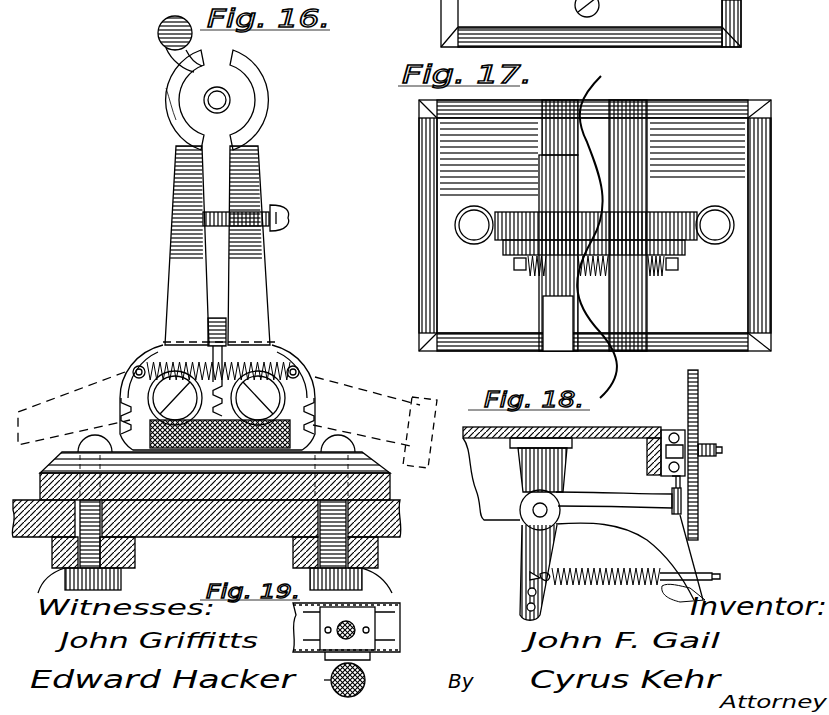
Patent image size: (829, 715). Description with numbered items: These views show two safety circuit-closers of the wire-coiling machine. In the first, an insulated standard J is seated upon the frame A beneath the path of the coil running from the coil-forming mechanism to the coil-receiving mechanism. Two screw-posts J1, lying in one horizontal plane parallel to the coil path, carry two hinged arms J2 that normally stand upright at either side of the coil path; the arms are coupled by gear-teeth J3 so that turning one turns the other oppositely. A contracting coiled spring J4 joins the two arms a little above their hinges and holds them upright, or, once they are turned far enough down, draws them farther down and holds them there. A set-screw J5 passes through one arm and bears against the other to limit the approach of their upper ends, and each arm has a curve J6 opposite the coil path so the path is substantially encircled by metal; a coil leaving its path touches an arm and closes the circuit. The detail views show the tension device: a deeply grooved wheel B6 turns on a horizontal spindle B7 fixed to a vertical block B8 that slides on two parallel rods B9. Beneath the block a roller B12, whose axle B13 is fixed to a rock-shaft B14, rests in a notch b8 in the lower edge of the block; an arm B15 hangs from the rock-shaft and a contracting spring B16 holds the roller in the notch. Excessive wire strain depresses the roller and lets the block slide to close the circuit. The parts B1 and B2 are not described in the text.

In FIG. 16, the insulated standard J is at (280, 356).
In FIG. 16, the screw-posts J1 is at (216, 398).
In FIG. 16, the arms J2 is at (217, 245).
In FIG. 16, the gear-teeth J3 is at (122, 397).
In FIG. 16, the contracting coiled spring J4 is at (298, 368).
In FIG. 16, the set-screw J5 is at (288, 218).
In FIG. 16, the curve J6 is at (170, 102).
In FIG. 17, the wire B1 is at (603, 86).
In FIG. 16, the ring B2 is at (230, 110).
In FIG. 18, the frame A is at (562, 461).
In FIG. 18, the wheel B6 is at (698, 395).
In FIG. 19, the wheel B6 is at (385, 600).
In FIG. 18, the horizontal spindle B7 is at (722, 450).
In FIG. 19, the horizontal spindle B7 is at (356, 630).
In FIG. 18, the vertical block B8 is at (676, 432).
In FIG. 19, the notch b8 is at (370, 660).
In FIG. 18, the parallel rods B9 is at (648, 449).
In FIG. 19, the parallel rods B9 is at (375, 615).
In FIG. 18, the roller B12 is at (630, 558).
In FIG. 19, the roller B12 is at (360, 692).
In FIG. 18, the axle B13 is at (618, 495).
In FIG. 19, the axle B13 is at (324, 680).
In FIG. 18, the rock-shaft B14 is at (538, 510).
In FIG. 18, the arm B15 is at (530, 566).
In FIG. 18, the contracting spring B16 is at (603, 560).